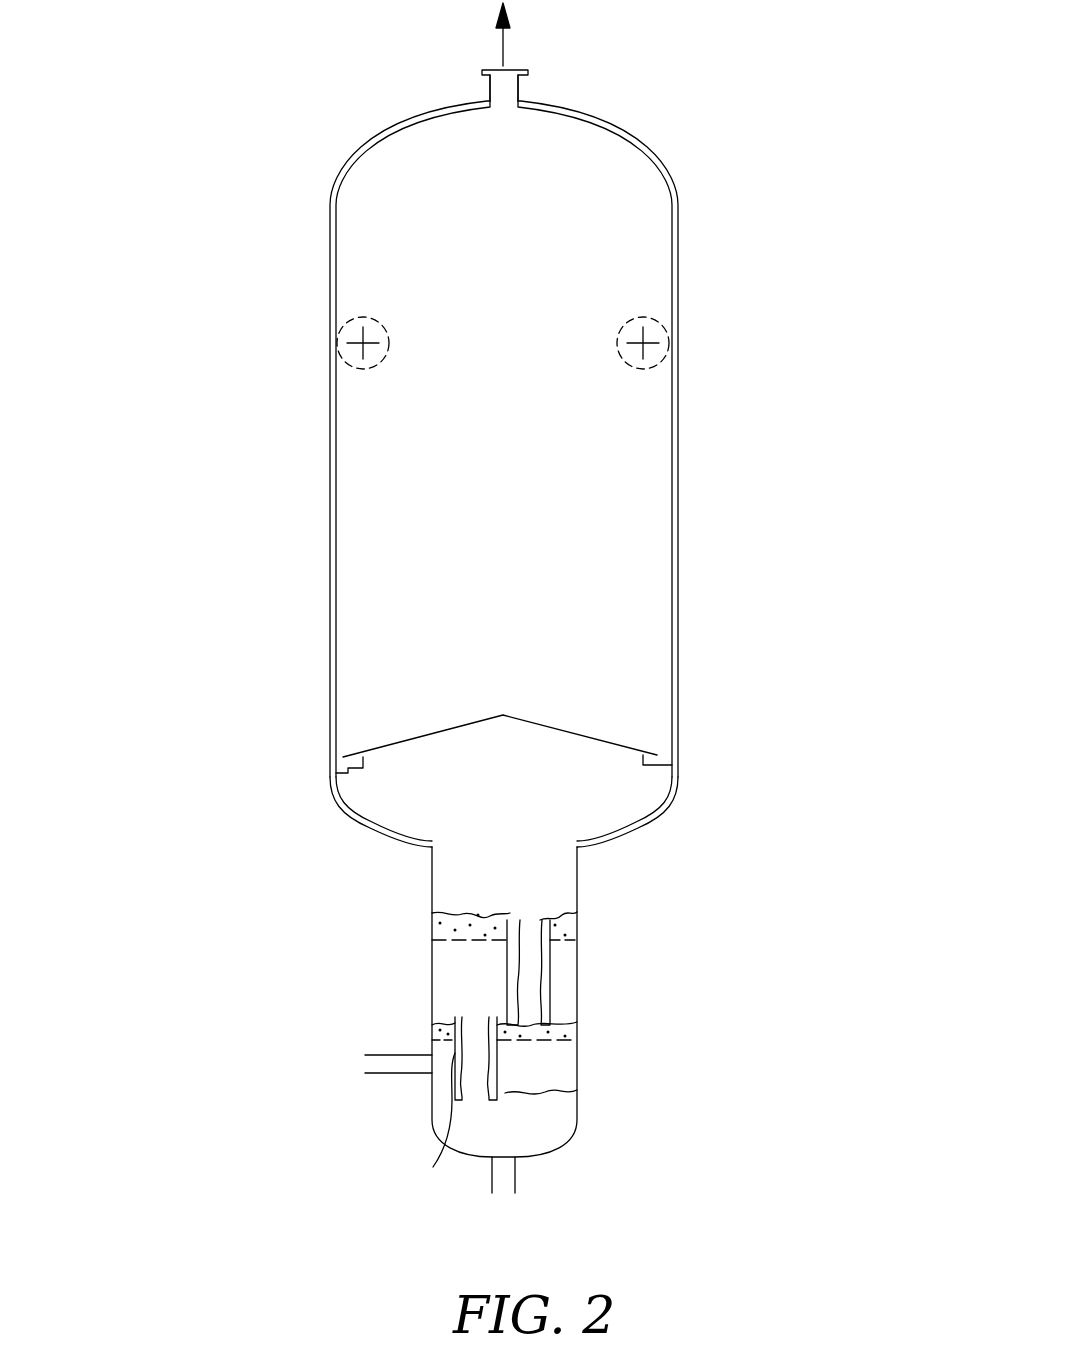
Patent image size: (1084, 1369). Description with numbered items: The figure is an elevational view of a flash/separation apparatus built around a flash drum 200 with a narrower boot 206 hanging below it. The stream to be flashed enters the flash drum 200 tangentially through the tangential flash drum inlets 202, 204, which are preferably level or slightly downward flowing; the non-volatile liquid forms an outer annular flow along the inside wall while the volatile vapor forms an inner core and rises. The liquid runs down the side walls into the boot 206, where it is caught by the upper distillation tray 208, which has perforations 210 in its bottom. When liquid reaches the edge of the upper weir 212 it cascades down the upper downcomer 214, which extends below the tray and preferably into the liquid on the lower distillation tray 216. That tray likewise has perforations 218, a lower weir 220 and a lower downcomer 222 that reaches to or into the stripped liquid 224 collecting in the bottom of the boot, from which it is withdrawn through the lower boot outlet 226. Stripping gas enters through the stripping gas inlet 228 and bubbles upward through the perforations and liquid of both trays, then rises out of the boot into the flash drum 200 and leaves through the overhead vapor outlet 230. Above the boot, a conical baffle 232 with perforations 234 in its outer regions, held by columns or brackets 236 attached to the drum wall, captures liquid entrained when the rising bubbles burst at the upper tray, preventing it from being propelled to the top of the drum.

The flash drum 200 is at (692, 500).
The tangential flash drum inlet 202 is at (648, 368).
The tangential flash drum inlet 204 is at (354, 364).
The boot 206 is at (607, 863).
The upper distillation tray 208 is at (440, 941).
The perforations 210 is at (484, 943).
The upper weir 212 is at (573, 925).
The upper downcomer 214 is at (572, 992).
The lower distillation tray 216 is at (577, 1050).
The perforations 218 is at (553, 1043).
The lower weir 220 is at (430, 1028).
The lower downcomer 222 is at (503, 1060).
The stripped liquid 224 is at (540, 1140).
The lower boot outlet 226 is at (515, 1175).
The stripping gas inlet 228 is at (385, 1073).
The overhead vapor outlet 230 is at (509, 70).
The conical baffle 232 is at (542, 727).
The perforations 234 is at (620, 745).
The columns or brackets 236 is at (352, 773).